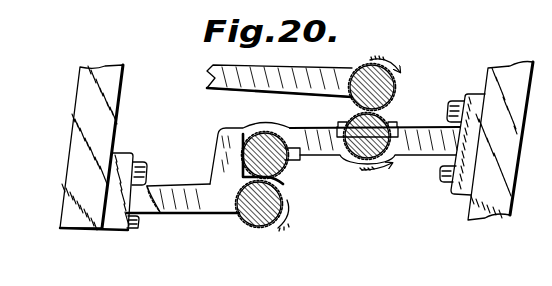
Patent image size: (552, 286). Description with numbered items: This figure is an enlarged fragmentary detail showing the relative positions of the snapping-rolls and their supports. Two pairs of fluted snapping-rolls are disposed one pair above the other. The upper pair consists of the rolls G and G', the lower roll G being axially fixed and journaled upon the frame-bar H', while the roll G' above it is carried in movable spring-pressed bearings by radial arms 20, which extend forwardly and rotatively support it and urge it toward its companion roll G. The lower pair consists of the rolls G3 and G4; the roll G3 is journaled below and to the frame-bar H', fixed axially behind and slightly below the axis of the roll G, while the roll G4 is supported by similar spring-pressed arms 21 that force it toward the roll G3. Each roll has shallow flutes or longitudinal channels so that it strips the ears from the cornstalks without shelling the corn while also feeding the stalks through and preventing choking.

The radial arm 20 is at (212, 77).
The radial arm 21 is at (157, 186).
The upper snapping-roll G is at (349, 131).
The upper snapping-roll G' is at (390, 83).
The lower snapping-roll G3 is at (287, 182).
The lower snapping-roll G4 is at (287, 200).
The frame-bar H' is at (375, 158).